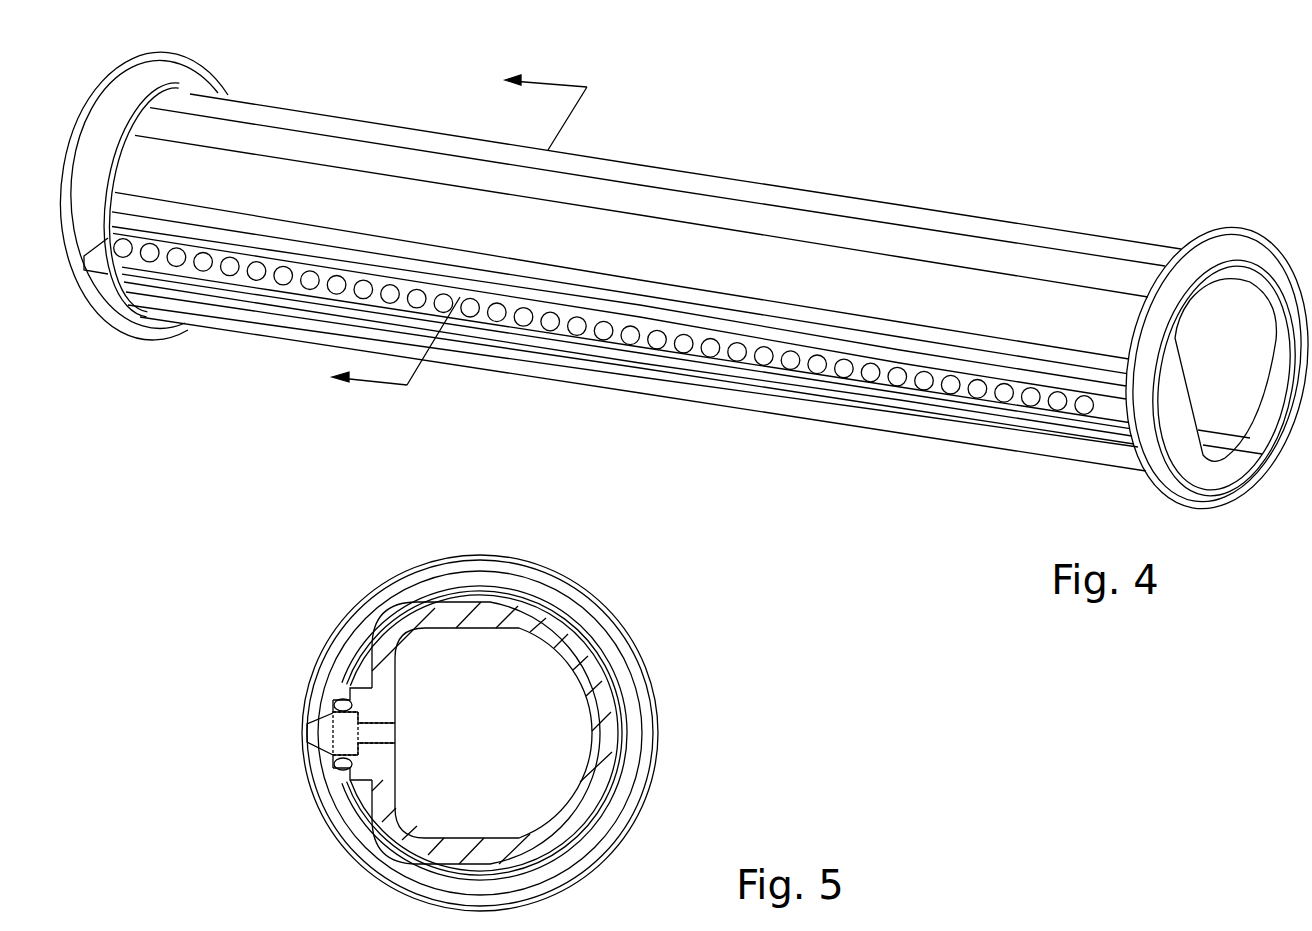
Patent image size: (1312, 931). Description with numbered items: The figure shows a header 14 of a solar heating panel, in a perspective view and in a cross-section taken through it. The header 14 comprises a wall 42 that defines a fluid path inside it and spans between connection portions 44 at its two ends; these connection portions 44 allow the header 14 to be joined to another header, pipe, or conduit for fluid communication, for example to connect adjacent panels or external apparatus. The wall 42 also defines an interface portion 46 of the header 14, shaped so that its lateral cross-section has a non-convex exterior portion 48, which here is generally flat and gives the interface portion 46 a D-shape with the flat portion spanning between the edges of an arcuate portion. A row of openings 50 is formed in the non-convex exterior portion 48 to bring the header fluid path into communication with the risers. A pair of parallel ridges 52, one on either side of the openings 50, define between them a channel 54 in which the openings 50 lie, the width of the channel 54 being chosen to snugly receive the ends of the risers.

In FIG. 4, the header 14 is at (808, 108).
In FIG. 5, the header 14 is at (704, 642).
In FIG. 5, the wall 42 is at (512, 622).
In FIG. 4, the connection portions 44 is at (158, 56).
In FIG. 4, the interface portion 46 is at (885, 247).
In FIG. 4, the non-convex exterior portion 48 is at (330, 240).
In FIG. 5, the non-convex exterior portion 48 is at (346, 661).
In FIG. 4, the openings 50 is at (661, 338).
In FIG. 5, the openings 50 is at (375, 735).
In FIG. 4, the ridges 52 is at (873, 397).
In FIG. 5, the ridges 52 is at (345, 704).
In FIG. 4, the channel 54 is at (755, 350).
In FIG. 5, the channel 54 is at (338, 732).